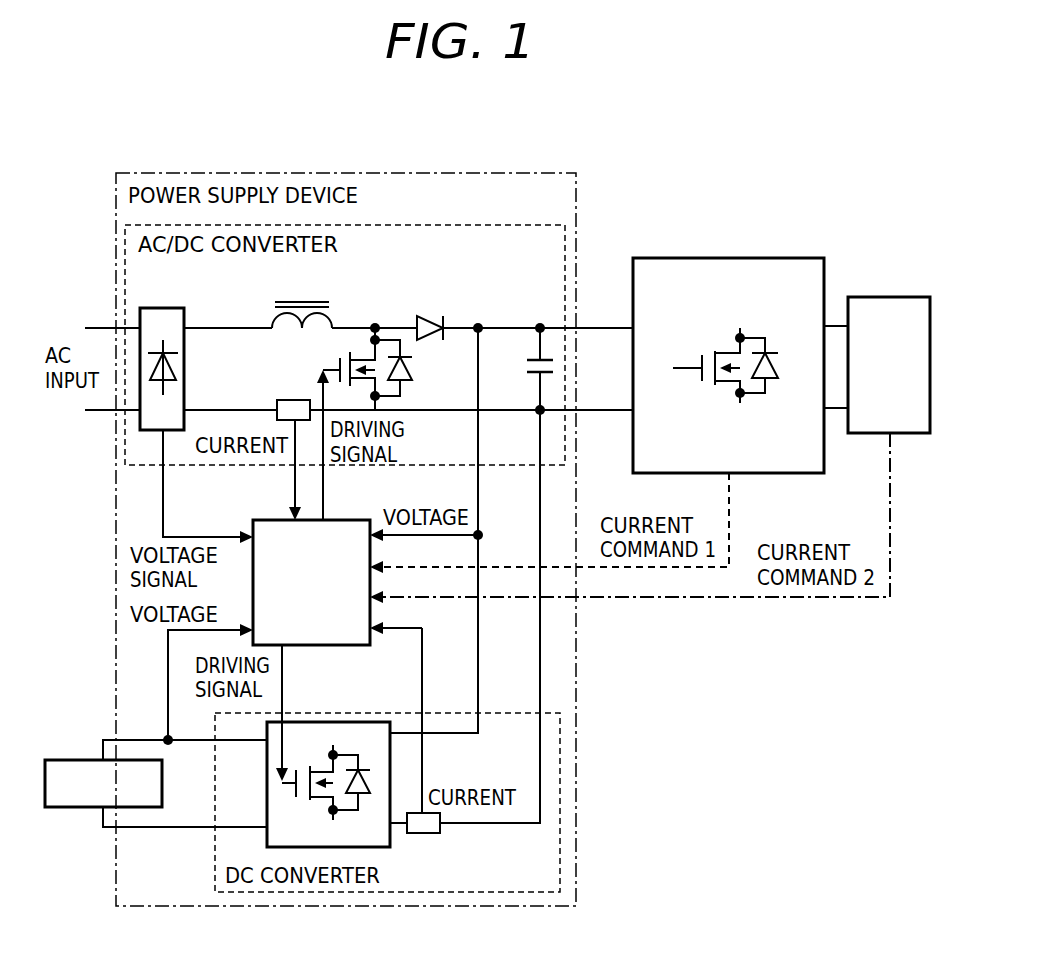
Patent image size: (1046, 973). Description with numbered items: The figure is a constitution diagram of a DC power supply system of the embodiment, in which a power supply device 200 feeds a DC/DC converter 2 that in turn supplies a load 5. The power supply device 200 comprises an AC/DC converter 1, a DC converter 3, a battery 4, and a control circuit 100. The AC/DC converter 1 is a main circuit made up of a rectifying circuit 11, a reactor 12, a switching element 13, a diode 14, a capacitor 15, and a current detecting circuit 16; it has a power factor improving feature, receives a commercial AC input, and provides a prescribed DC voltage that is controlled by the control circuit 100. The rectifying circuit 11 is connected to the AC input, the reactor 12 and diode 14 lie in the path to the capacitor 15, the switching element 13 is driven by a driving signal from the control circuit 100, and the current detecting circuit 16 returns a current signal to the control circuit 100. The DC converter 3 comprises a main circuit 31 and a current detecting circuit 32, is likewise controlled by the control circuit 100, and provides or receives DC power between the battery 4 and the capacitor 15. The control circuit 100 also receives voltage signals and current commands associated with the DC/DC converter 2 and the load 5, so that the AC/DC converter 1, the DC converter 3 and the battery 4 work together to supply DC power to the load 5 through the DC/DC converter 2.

The power supply device 200 is at (567, 190).
The AC/DC converter 1 is at (500, 232).
The rectifying circuit 11 is at (178, 395).
The reactor 12 is at (335, 316).
The switching element 13 is at (358, 350).
The diode 14 is at (430, 318).
The capacitor 15 is at (530, 352).
The current detecting circuit 16 is at (298, 402).
The control circuit 100 is at (330, 520).
The DC/DC converter 2 is at (757, 258).
The DC converter 3 is at (585, 745).
The main circuit 31 is at (370, 728).
The current detecting circuit 32 is at (430, 833).
The battery 4 is at (85, 760).
The load 5 is at (900, 297).